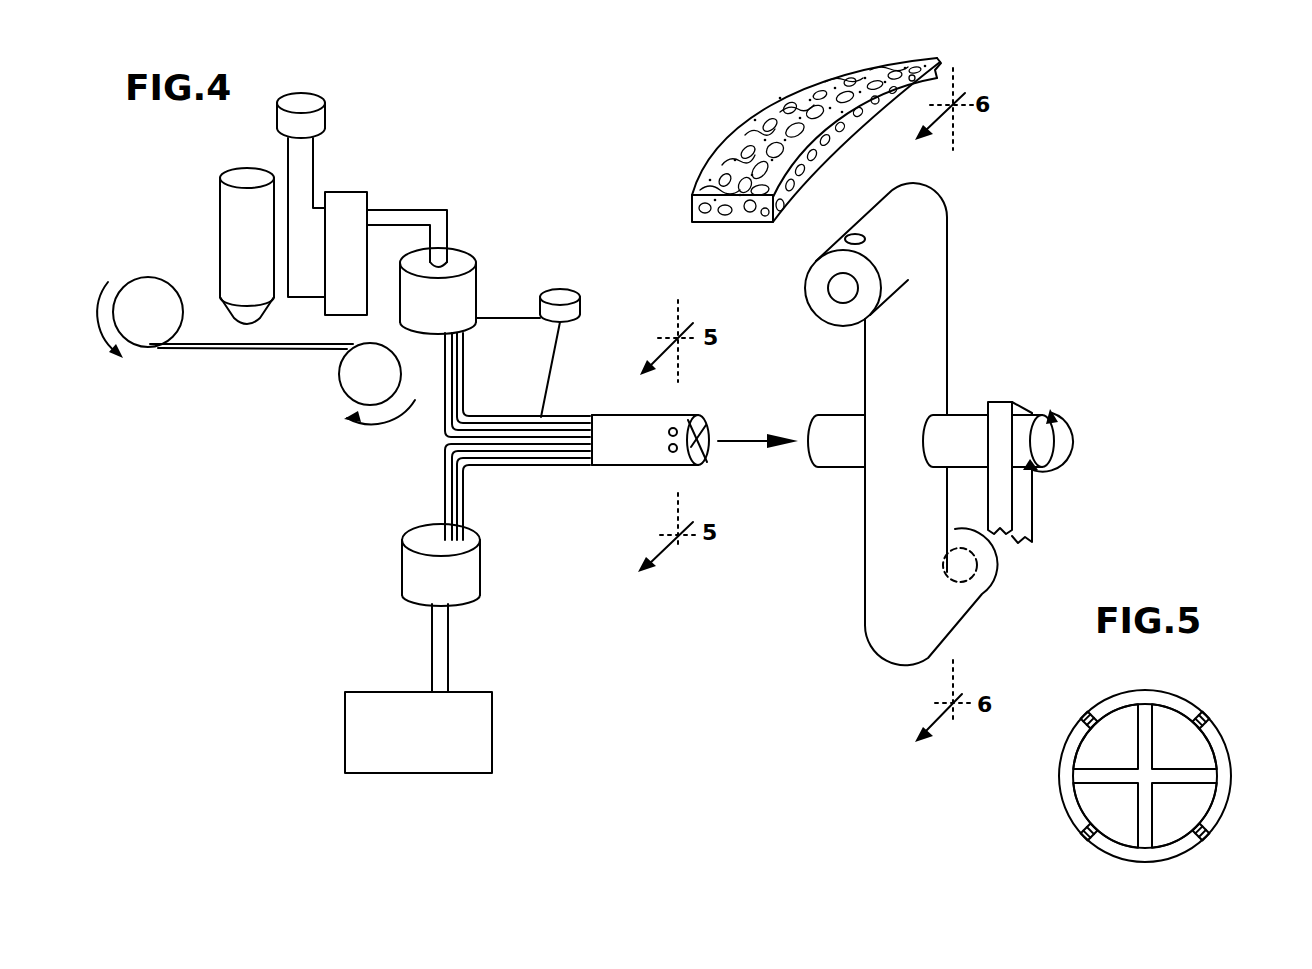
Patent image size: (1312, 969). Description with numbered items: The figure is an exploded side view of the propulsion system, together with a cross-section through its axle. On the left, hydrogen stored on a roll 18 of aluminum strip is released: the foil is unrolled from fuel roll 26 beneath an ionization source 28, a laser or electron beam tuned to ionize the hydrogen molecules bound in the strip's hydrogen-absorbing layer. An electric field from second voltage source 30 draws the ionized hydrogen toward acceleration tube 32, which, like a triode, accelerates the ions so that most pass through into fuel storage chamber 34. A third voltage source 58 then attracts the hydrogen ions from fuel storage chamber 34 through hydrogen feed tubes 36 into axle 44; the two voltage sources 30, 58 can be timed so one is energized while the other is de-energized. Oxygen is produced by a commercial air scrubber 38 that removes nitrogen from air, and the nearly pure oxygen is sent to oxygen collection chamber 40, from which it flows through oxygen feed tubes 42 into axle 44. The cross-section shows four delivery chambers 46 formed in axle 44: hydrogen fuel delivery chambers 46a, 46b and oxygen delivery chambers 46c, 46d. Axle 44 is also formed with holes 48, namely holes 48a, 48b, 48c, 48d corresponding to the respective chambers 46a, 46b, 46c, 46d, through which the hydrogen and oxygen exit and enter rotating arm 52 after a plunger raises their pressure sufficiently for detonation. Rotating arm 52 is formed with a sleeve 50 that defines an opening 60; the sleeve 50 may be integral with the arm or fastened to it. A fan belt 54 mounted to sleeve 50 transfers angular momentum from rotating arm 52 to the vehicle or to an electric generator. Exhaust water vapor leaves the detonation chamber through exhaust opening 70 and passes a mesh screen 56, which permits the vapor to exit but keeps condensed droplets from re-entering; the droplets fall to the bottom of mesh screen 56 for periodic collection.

In FIG. 4, the roll 18 is at (355, 375).
In FIG. 4, the fuel roll 26 is at (153, 290).
In FIG. 4, the ionization source 28 is at (232, 217).
In FIG. 4, the second voltage source 30 is at (320, 117).
In FIG. 4, the acceleration tube 32 is at (355, 200).
In FIG. 4, the fuel storage chamber 34 is at (465, 262).
In FIG. 4, the hydrogen feed tubes 36 is at (565, 415).
In FIG. 4, the air scrubber 38 is at (472, 722).
In FIG. 4, the oxygen collection chamber 40 is at (473, 570).
In FIG. 4, the oxygen feed tubes 42 is at (515, 463).
In FIG. 4, the axle 44 is at (672, 433).
In FIG. 5, the axle 44 is at (1108, 775).
In FIG. 4, the delivery chambers 46 is at (700, 418).
In FIG. 4, the holes 48 is at (671, 452).
In FIG. 4, the sleeve 50 is at (958, 433).
In FIG. 4, the rotating arm 52 is at (935, 292).
In FIG. 4, the fan belt 54 is at (1025, 517).
In FIG. 4, the mesh screen 56 is at (732, 128).
In FIG. 4, the third voltage source 58 is at (582, 308).
In FIG. 4, the opening 60 is at (1060, 428).
In FIG. 4, the exhaust opening 70 is at (833, 288).
In FIG. 5, the hydrogen fuel delivery chamber 46a is at (1165, 720).
In FIG. 5, the hydrogen fuel delivery chamber 46b is at (1168, 830).
In FIG. 5, the oxygen delivery chamber 46c is at (1123, 720).
In FIG. 5, the oxygen delivery chamber 46d is at (1122, 830).
In FIG. 5, the hole 48a is at (1202, 722).
In FIG. 5, the hole 48b is at (1200, 832).
In FIG. 5, the hole 48c is at (1087, 722).
In FIG. 5, the hole 48d is at (1088, 832).